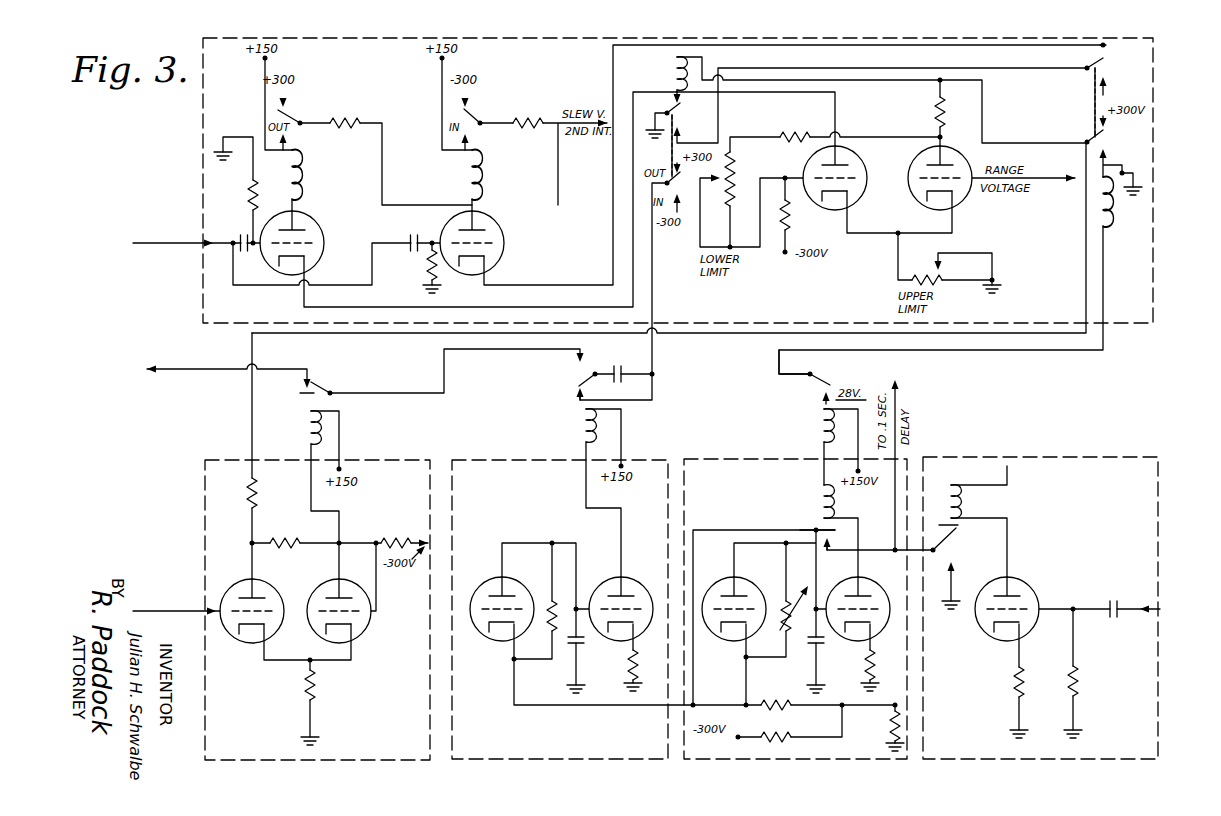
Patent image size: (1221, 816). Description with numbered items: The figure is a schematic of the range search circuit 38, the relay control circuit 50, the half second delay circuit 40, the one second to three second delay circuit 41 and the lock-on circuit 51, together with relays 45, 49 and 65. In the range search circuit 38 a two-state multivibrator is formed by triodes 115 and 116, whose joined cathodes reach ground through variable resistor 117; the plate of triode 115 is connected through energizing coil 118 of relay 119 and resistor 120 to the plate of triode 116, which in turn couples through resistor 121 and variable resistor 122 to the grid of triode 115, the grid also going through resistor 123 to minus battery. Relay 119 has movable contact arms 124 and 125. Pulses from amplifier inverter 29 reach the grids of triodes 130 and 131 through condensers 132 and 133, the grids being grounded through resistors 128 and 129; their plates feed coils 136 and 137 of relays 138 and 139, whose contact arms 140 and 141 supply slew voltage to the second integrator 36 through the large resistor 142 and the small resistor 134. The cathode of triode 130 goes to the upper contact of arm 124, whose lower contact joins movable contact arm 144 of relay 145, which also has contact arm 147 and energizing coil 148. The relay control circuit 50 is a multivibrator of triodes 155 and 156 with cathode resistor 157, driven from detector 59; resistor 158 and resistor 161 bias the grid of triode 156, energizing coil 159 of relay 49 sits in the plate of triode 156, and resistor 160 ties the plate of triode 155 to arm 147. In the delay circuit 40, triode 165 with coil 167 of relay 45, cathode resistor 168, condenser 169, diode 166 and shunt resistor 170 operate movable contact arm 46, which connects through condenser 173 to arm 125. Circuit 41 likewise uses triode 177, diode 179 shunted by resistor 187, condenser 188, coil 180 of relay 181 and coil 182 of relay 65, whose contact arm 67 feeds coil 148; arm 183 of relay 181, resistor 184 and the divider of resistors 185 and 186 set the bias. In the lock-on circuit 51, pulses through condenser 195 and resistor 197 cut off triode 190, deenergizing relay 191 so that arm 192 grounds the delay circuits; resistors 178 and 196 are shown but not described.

The amplifier inverter 29 is at (665, 434).
The second integrator 36 is at (186, 376).
The range search circuit 38 is at (590, 322).
The .5 second delay circuit 40 is at (648, 747).
The 1 second—3 second delay circuit 41 is at (727, 514).
The relay 45 is at (573, 405).
The movable contact arm 46 is at (590, 374).
The relay 49 is at (300, 399).
The relay control circuit 50 is at (377, 746).
The lock-on circuit 51 is at (1083, 526).
The detector 59 is at (161, 621).
The relay 65 is at (812, 403).
The contact arm 67 is at (813, 374).
The triode 115 is at (848, 148).
The triode 116 is at (952, 150).
The variable resistor 117 is at (925, 262).
The energizing coil 118 is at (672, 63).
The relay 119 is at (670, 84).
The resistor 120 is at (935, 110).
The resistor 121 is at (800, 142).
The variable resistor 122 is at (736, 166).
The resistor 123 is at (792, 222).
The movable contact arm 124 is at (675, 112).
The movable contact arm 125 is at (674, 185).
The resistor 128 is at (248, 192).
The resistor 129 is at (425, 268).
The triode 130 is at (285, 213).
The triode 131 is at (500, 236).
The condenser 132 is at (240, 236).
The condenser 133 is at (413, 236).
The resistor 134 is at (532, 114).
The coil 136 is at (294, 174).
The coil 137 is at (474, 174).
The relay 138 is at (293, 111).
The relay 139 is at (478, 111).
The movable contact arm 140 is at (290, 130).
The movable contact arm 141 is at (474, 130).
The resistor 142 is at (346, 114).
The movable contact arm 144 is at (1108, 66).
The relay 145 is at (1108, 48).
The movable contact arm 147 is at (1108, 146).
The energizing coil 148 is at (1106, 226).
The triode 155 is at (242, 582).
The triode 156 is at (327, 582).
The resistor 157 is at (302, 688).
The resistor 158 is at (292, 536).
The energizing coil 159 is at (305, 425).
The resistor 160 is at (247, 492).
The resistor 161 is at (403, 536).
The triode 165 is at (614, 582).
The diode 166 is at (501, 582).
The energizing coil 167 is at (582, 426).
The resistor 168 is at (624, 676).
The condenser 169 is at (580, 660).
The resistor 170 is at (548, 645).
The condenser 173 is at (618, 364).
The triode 177 is at (857, 582).
The resistor 178 is at (865, 662).
The diode 179 is at (731, 582).
The energizing coil 180 is at (820, 496).
The relay 181 is at (820, 524).
The energizing coil 182 is at (820, 425).
The movable contact arm 183 is at (810, 532).
The resistor 184 is at (789, 698).
The resistor 185 is at (890, 724).
The resistor 186 is at (789, 732).
The resistor 187 is at (796, 601).
The condenser 188 is at (810, 664).
The triode 190 is at (1045, 578).
The relay 191 is at (958, 530).
The contact arm 192 is at (950, 546).
The condenser 195 is at (1125, 576).
The resistor 196 is at (1014, 672).
The resistor 197 is at (1070, 672).